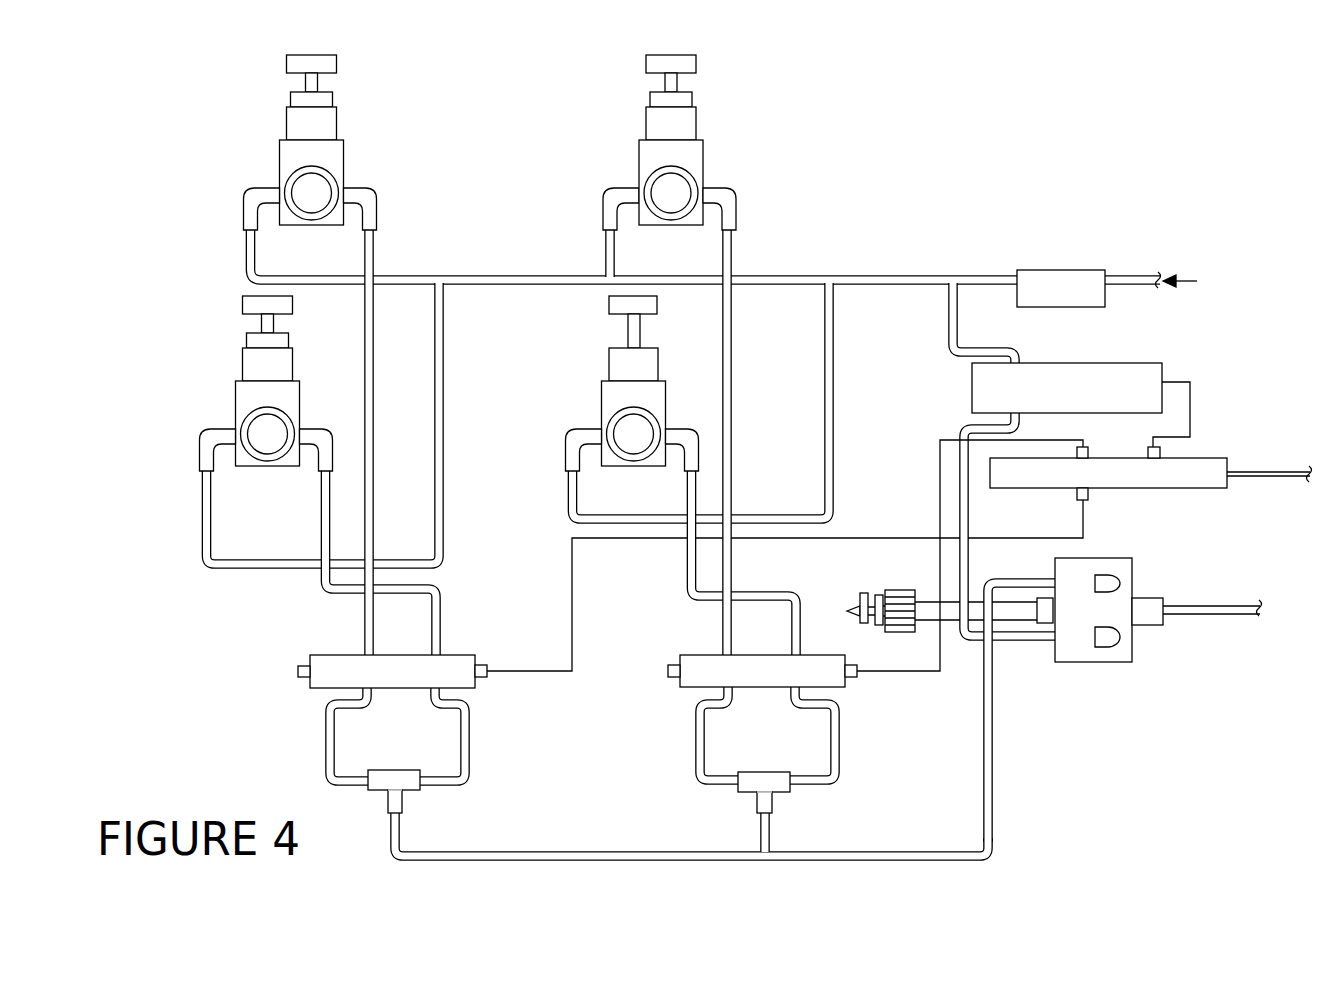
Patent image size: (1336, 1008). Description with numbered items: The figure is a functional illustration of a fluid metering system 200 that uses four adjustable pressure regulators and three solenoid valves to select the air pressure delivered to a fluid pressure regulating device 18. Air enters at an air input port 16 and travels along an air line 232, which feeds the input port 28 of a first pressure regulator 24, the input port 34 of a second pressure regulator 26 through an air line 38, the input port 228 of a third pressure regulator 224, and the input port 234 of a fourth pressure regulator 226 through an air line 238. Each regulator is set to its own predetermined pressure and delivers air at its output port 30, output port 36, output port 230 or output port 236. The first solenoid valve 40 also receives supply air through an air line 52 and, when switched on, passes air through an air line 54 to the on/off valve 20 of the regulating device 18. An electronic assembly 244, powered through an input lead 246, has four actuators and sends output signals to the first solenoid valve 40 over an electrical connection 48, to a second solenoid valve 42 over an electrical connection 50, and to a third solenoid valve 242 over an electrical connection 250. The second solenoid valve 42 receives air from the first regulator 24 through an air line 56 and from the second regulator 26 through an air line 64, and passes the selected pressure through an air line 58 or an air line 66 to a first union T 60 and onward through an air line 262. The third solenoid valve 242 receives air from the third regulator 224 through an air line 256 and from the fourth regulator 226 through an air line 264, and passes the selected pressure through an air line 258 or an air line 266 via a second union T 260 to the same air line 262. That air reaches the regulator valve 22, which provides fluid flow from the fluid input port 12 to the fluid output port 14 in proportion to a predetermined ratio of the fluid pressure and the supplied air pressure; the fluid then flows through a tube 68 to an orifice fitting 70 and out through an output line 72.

The fluid metering system 200 is at (961, 187).
The air input port 16 is at (1062, 276).
The fluid input port 12 is at (1152, 620).
The fluid output port 14 is at (1045, 623).
The fluid pressure regulating device 18 is at (1132, 558).
The on/off valve 20 is at (1105, 640).
The regulator valve 22 is at (1120, 578).
The first pressure regulator 24 is at (703, 158).
The second pressure regulator 26 is at (658, 348).
The input port 28 is at (608, 202).
The output port 30 is at (737, 210).
The input port 34 is at (578, 436).
The output port 36 is at (686, 436).
The air line 38 is at (834, 400).
The first solenoid valve 40 is at (1162, 367).
The second solenoid valve 42 is at (846, 688).
The electrical connection 48 is at (1190, 408).
The electrical connection 50 is at (940, 492).
The air line 52 is at (958, 326).
The air line 54 is at (968, 519).
The air line 56 is at (732, 398).
The air line 58 is at (698, 736).
The first union T 60 is at (776, 780).
The air line 64 is at (800, 600).
The air line 66 is at (838, 747).
The tube 68 is at (948, 620).
The orifice fitting 70 is at (898, 624).
The output line 72 is at (864, 596).
The third pressure regulator 224 is at (344, 150).
The fourth pressure regulator 226 is at (236, 380).
The input port 228 is at (250, 192).
The output port 230 is at (378, 206).
The air line 232 is at (496, 276).
The input port 234 is at (204, 441).
The output port 236 is at (324, 434).
The air line 238 is at (444, 434).
The third solenoid valve 242 is at (476, 688).
The electronic assembly 244 is at (1227, 488).
The input lead 246 is at (1268, 470).
The electrical connection 250 is at (574, 630).
The air line 256 is at (373, 438).
The air line 258 is at (330, 740).
The second union T 260 is at (412, 778).
The air line 262 is at (700, 861).
The air line 264 is at (441, 614).
The air line 266 is at (470, 748).